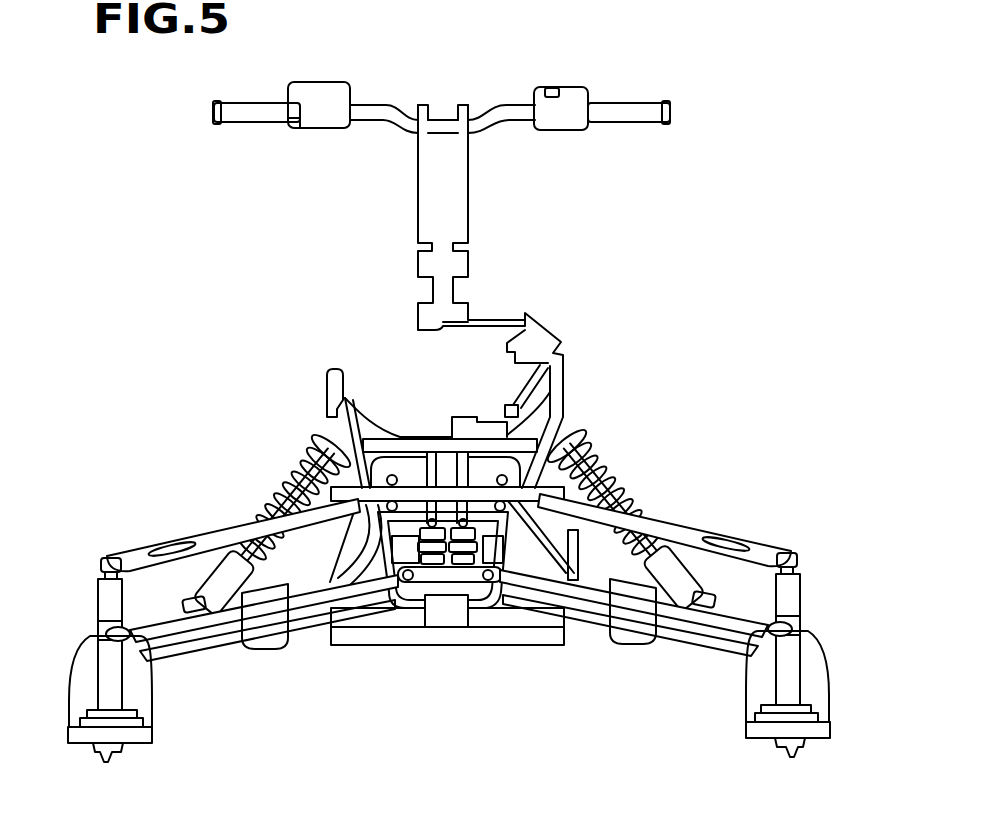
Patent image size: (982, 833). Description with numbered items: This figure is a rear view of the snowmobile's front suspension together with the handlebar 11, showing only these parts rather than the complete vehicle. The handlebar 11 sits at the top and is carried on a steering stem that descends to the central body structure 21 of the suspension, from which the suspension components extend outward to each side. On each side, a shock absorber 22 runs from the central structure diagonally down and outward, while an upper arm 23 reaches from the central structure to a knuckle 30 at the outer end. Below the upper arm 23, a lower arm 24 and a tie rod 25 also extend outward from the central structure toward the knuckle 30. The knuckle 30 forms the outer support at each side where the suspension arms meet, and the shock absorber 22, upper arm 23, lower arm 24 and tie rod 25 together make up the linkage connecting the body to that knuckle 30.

The handlebar 11 is at (570, 58).
The body frame 21 is at (558, 428).
The shock absorber 22 is at (307, 460).
The upper arm 23 is at (180, 538).
The lower arm 24 is at (195, 642).
The tie rod 25 is at (232, 617).
The knuckle 30 is at (97, 577).